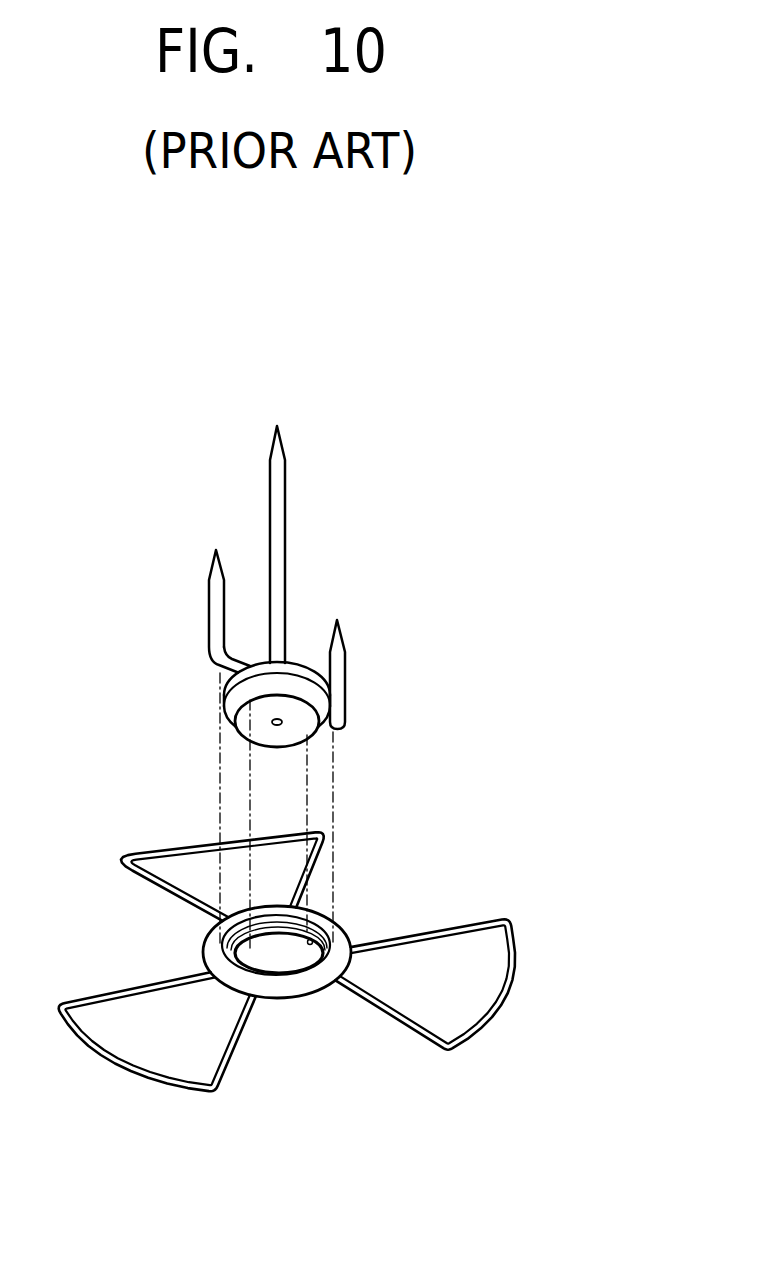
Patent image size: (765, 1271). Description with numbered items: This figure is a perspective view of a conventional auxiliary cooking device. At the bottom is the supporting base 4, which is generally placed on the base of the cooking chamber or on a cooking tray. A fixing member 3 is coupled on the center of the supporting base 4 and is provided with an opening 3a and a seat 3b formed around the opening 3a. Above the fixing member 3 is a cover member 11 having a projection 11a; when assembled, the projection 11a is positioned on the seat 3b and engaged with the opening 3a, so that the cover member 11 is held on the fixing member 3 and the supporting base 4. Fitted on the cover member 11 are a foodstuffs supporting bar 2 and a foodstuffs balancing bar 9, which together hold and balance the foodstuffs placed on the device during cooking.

The foodstuffs supporting bar 2 is at (285, 515).
The foodstuffs balancing bar 9 is at (338, 663).
The cover member 11 is at (298, 662).
The projection 11a is at (297, 693).
The fixing member 3 is at (292, 983).
The opening 3a is at (277, 957).
The seat 3b is at (323, 950).
The supporting base 4 is at (433, 1043).